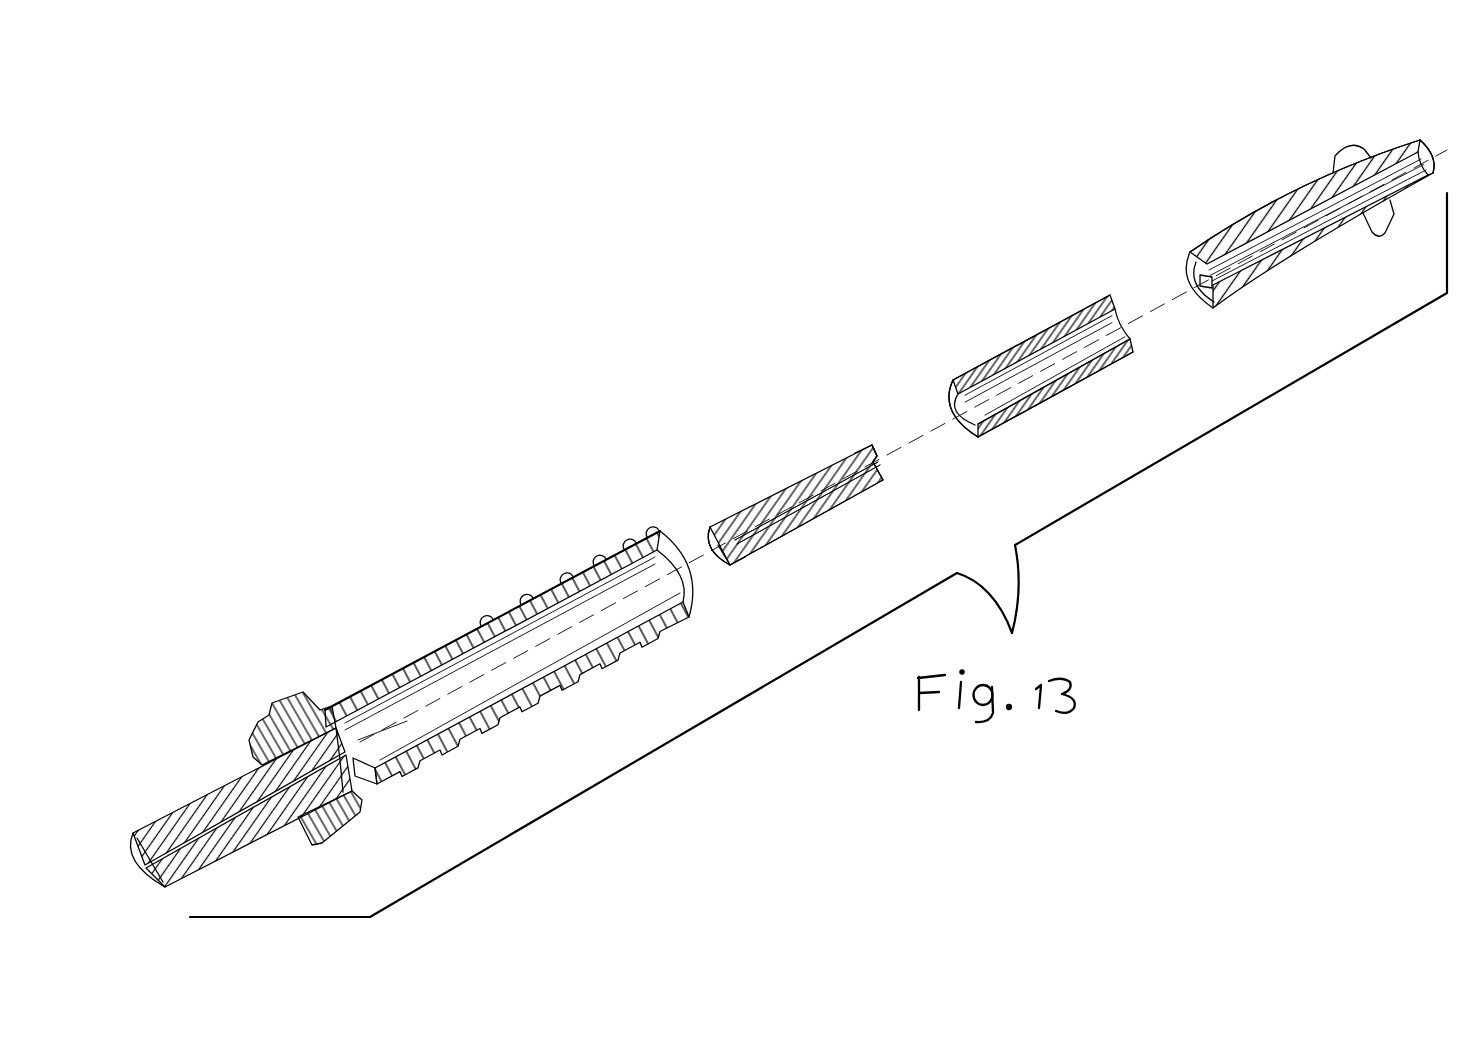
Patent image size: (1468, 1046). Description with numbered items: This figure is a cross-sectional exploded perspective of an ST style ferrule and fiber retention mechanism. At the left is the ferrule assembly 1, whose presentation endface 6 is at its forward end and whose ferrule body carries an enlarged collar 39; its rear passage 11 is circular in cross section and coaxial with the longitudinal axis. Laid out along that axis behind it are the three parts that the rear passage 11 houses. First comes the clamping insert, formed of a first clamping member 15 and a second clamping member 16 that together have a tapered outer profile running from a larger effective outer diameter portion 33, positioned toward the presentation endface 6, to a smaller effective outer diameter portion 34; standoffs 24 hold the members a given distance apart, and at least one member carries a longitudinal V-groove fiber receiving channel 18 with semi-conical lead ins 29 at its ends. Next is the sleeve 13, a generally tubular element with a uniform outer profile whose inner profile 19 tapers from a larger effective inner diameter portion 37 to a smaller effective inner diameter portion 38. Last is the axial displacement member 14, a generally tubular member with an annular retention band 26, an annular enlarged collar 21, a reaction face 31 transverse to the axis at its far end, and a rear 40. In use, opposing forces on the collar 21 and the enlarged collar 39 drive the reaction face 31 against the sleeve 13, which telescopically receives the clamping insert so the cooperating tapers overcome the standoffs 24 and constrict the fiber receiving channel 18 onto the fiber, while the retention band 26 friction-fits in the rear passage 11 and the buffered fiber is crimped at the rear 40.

The ferrule assembly 1 is at (393, 628).
The presentation endface 6 is at (143, 858).
The rear passage 11 is at (488, 645).
The sleeve 13 is at (1038, 312).
The axial displacement member 14 is at (1225, 217).
The first clamping member 15 is at (782, 533).
The second clamping member 16 is at (790, 485).
The fiber receiving channel 18 is at (822, 497).
The inner profile 19 is at (1042, 390).
The annular enlarged collar 21 is at (1355, 148).
The standoffs 24 is at (875, 447).
The annular retention band 26 is at (1303, 185).
The lead ins 29 is at (723, 562).
The reaction face 31 is at (1202, 293).
The larger effective outer diameter portion 33 is at (740, 518).
The smaller effective outer diameter portion 34 is at (876, 478).
The larger effective inner diameter portion 37 is at (995, 375).
The smaller effective inner diameter portion 38 is at (1083, 356).
The enlarged collar 39 is at (298, 710).
The rear 40 is at (1405, 192).